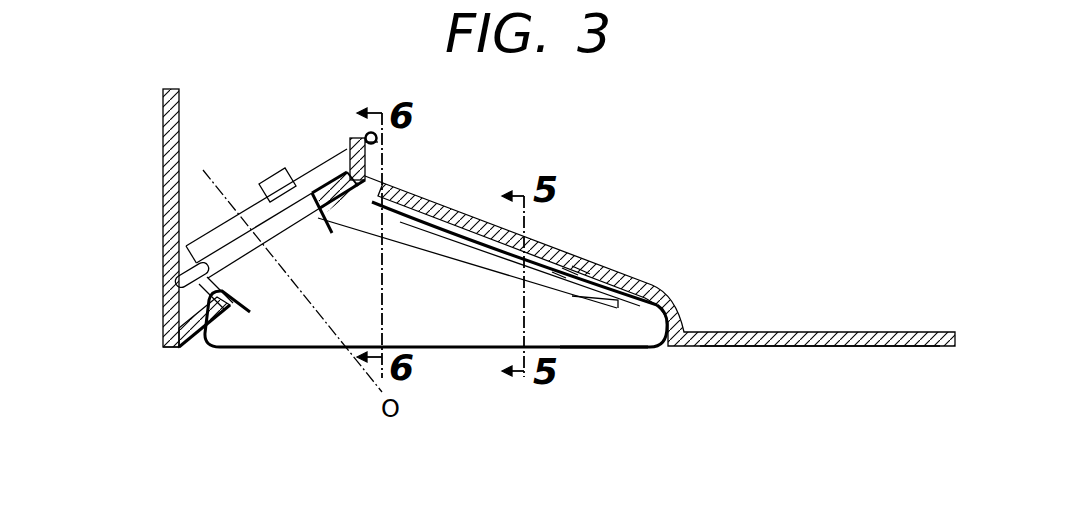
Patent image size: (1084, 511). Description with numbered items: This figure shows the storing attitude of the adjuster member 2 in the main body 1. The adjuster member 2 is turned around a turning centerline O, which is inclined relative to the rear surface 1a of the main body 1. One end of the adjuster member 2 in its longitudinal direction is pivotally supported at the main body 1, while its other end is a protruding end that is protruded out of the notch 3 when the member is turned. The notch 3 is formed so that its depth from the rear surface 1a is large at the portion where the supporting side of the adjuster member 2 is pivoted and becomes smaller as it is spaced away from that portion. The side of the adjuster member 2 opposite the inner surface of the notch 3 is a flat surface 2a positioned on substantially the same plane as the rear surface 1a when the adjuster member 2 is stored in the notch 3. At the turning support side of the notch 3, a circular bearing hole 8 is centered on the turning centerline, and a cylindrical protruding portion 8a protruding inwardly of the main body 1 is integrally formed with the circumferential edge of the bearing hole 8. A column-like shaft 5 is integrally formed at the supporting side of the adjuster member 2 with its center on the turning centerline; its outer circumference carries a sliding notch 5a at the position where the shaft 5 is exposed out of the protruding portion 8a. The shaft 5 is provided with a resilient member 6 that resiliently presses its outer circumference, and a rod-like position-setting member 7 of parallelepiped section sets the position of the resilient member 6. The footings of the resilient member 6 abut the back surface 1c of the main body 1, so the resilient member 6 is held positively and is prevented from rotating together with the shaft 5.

The main body 1 is at (842, 332).
The rear surface 1a is at (785, 346).
The back surface 1c is at (163, 168).
The adjuster member 2 is at (293, 335).
The flat surface 2a is at (617, 348).
The notch 3 is at (586, 284).
The shaft 5 is at (256, 194).
The sliding notch 5a is at (280, 198).
The resilient member 6 is at (332, 168).
The position-setting member 7 is at (360, 162).
The bearing hole 8 is at (324, 221).
The protruding portion 8a is at (228, 302).